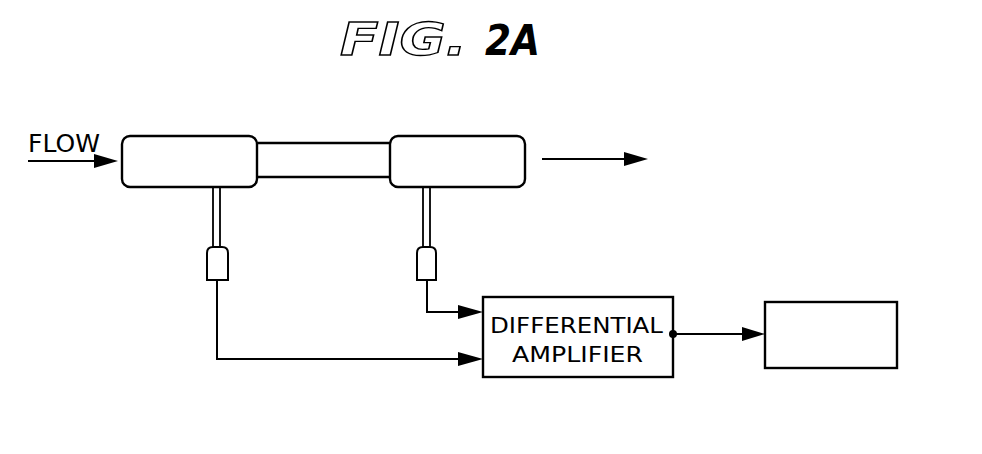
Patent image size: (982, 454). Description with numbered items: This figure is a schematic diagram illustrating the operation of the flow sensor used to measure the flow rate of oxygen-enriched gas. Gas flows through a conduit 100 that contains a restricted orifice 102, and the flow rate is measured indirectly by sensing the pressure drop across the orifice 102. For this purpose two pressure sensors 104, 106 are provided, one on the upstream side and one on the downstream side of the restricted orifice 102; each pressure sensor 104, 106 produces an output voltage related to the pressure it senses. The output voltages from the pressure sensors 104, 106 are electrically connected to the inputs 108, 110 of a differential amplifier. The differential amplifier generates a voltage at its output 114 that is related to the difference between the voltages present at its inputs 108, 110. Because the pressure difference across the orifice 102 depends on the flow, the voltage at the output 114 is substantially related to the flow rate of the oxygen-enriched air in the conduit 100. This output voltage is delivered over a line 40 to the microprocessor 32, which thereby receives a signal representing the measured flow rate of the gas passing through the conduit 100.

The conduit 100 is at (182, 136).
The restricted orifice 102 is at (297, 143).
The pressure sensor 104 is at (207, 257).
The pressure sensor 106 is at (417, 257).
The input 108 is at (483, 311).
The input 110 is at (482, 363).
The output 114 is at (675, 333).
The line 40 is at (724, 337).
The microprocessor 32 is at (819, 302).